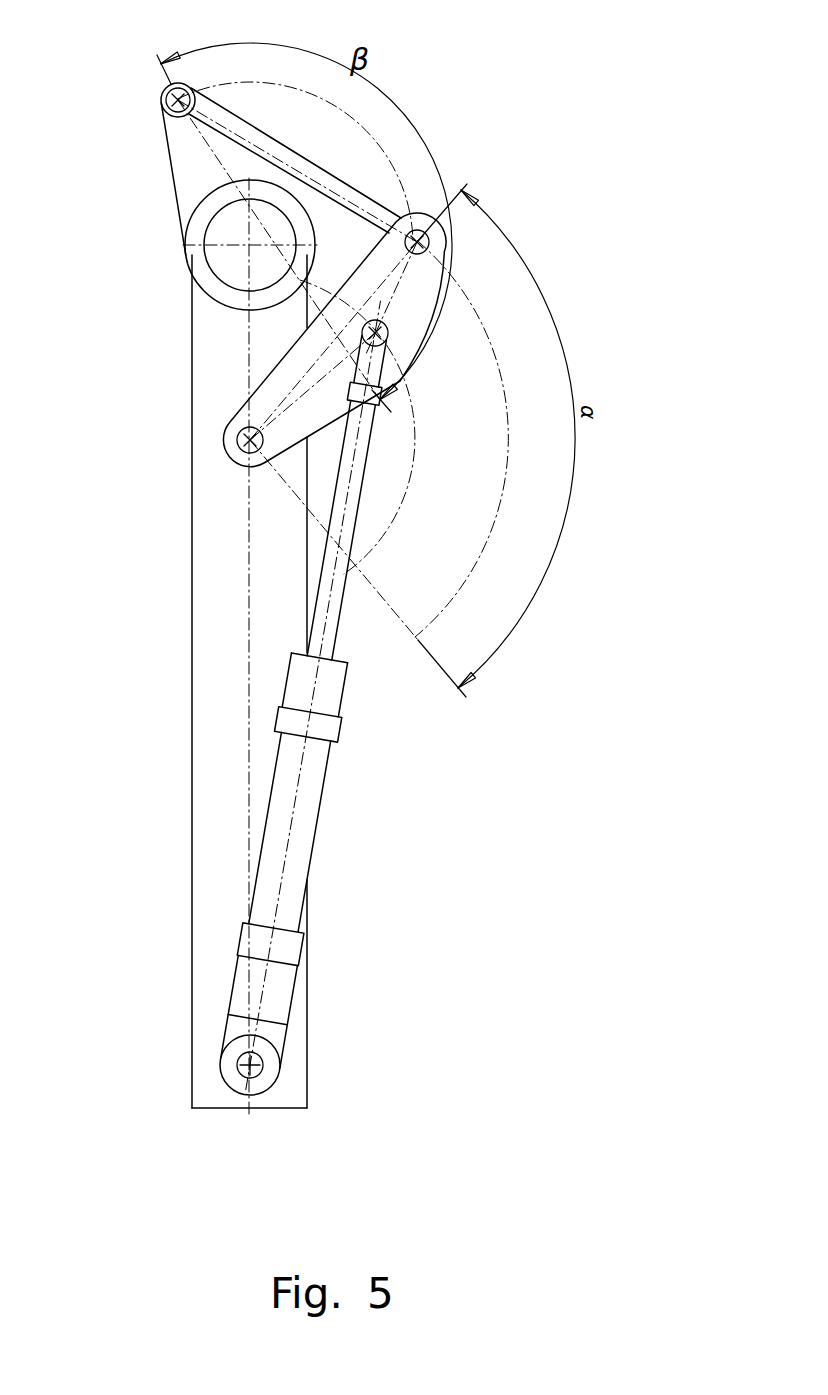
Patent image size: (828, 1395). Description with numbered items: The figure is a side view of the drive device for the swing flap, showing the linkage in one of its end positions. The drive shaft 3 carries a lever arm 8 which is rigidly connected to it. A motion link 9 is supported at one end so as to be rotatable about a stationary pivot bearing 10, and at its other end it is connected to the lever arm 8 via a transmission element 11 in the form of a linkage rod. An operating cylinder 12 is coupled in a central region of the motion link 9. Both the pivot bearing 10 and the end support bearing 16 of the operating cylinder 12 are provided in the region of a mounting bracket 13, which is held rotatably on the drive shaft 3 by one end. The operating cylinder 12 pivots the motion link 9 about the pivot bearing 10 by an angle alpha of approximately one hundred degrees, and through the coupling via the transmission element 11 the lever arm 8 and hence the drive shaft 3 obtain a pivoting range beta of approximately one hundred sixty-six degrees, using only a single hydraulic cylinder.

The drive shaft 3 is at (223, 265).
The lever arm 8 is at (188, 157).
The motion link 9 is at (422, 266).
The pivot bearing 10 is at (236, 446).
The transmission element 11 is at (353, 195).
The operating cylinder 12 is at (318, 805).
The mounting bracket 13 is at (222, 668).
The end support bearing 16 is at (230, 1073).